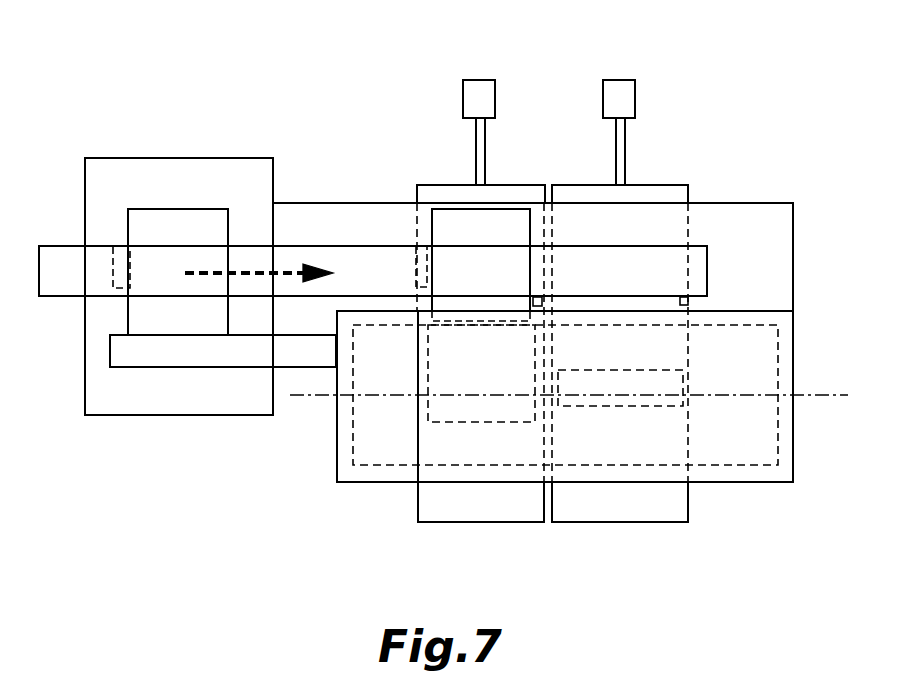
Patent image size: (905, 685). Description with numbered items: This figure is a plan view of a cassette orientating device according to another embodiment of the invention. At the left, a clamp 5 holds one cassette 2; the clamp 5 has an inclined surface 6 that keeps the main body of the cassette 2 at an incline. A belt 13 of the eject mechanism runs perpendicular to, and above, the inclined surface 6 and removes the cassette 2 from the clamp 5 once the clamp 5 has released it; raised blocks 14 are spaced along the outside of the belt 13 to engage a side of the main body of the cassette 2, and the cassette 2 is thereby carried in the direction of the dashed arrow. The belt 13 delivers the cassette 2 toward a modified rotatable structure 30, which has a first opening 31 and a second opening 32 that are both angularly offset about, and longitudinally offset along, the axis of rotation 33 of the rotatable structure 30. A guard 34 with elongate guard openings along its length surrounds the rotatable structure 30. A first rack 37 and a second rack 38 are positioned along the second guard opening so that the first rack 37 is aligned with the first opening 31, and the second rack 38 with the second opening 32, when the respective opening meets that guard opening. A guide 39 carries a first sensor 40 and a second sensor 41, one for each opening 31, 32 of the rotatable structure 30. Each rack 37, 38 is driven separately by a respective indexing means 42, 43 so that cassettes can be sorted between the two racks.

The cassette 2 is at (520, 207).
The clamp 5 is at (87, 388).
The inclined surface 6 is at (262, 180).
The belt 13 is at (670, 246).
The raised blocks 14 is at (112, 258).
The rotatable structure 30 is at (753, 427).
The first opening 31 is at (495, 413).
The second opening 32 is at (653, 405).
The axis of rotation 33 is at (832, 392).
The guard 34 is at (350, 483).
The first rack 37 is at (435, 185).
The second rack 38 is at (582, 185).
The guide 39 is at (740, 202).
The first sensor 40 is at (537, 297).
The second sensor 41 is at (682, 297).
The indexing means 42 is at (480, 80).
The indexing means 43 is at (620, 80).